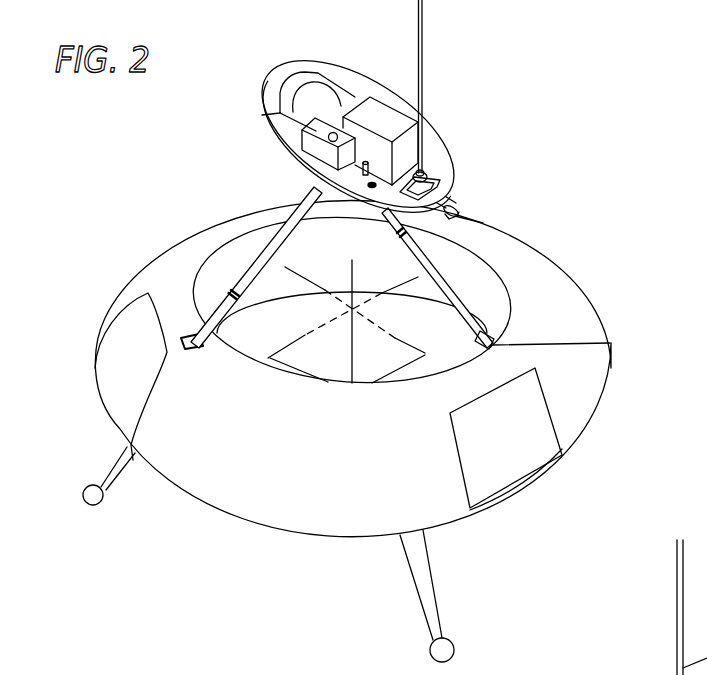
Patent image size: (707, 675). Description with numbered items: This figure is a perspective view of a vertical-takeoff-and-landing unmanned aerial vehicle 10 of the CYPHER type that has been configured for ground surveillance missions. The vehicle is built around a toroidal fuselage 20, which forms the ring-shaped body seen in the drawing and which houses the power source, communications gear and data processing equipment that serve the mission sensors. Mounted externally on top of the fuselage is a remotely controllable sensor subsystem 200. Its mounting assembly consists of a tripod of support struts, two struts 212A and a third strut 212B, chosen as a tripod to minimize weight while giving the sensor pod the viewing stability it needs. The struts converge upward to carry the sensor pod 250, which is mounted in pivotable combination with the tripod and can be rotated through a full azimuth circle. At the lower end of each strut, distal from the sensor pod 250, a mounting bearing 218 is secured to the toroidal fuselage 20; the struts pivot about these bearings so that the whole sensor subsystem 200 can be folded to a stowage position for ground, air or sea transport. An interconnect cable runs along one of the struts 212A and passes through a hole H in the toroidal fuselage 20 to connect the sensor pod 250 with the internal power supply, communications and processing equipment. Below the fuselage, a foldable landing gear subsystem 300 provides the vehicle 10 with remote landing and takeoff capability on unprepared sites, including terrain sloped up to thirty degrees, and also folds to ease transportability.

The unmanned aerial vehicle 10 is at (630, 296).
The toroidal fuselage 20 is at (590, 399).
The hole H is at (185, 341).
The sensor subsystem 200 is at (469, 97).
The support strut 212A is at (273, 240).
The support strut 212B is at (437, 289).
The mounting bearing 218 is at (483, 223).
The sensor pod 250 is at (313, 54).
The landing gear subsystem 300 is at (107, 494).